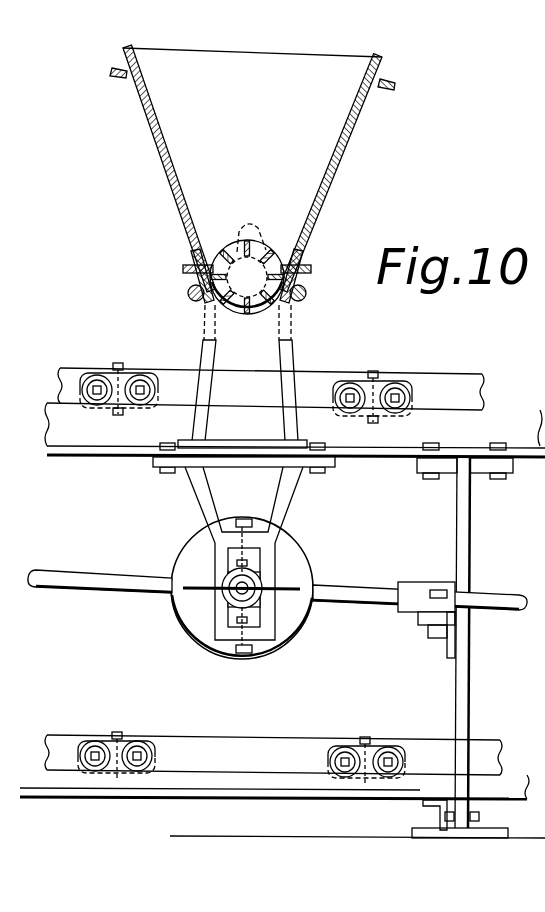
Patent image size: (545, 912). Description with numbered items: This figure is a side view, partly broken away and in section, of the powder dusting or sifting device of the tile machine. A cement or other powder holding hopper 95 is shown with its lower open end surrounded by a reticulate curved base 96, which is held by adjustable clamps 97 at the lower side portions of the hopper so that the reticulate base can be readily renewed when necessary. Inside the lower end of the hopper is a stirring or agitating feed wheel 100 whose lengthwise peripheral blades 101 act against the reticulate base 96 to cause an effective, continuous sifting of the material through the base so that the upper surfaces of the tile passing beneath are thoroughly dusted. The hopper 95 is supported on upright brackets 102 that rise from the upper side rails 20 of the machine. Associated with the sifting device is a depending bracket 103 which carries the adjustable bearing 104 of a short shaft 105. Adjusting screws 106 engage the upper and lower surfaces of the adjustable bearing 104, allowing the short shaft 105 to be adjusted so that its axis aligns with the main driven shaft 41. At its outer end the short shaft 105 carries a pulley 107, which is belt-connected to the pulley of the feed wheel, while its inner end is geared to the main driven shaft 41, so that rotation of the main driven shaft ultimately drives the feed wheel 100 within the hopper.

The hopper 95 is at (323, 152).
The reticulate curved base 96 is at (256, 275).
The adjustable clamps 97 is at (190, 283).
The feed wheel 100 is at (268, 250).
The peripheral blades 101 is at (231, 245).
The upright brackets 102 is at (205, 398).
The upper side rails 20 is at (95, 445).
The depending bracket 103 is at (203, 499).
The adjustable bearing 104 is at (236, 612).
The short shaft 105 is at (248, 586).
The adjusting screws 106 is at (255, 520).
The pulley 107 is at (232, 592).
The main driven shaft 41 is at (340, 590).